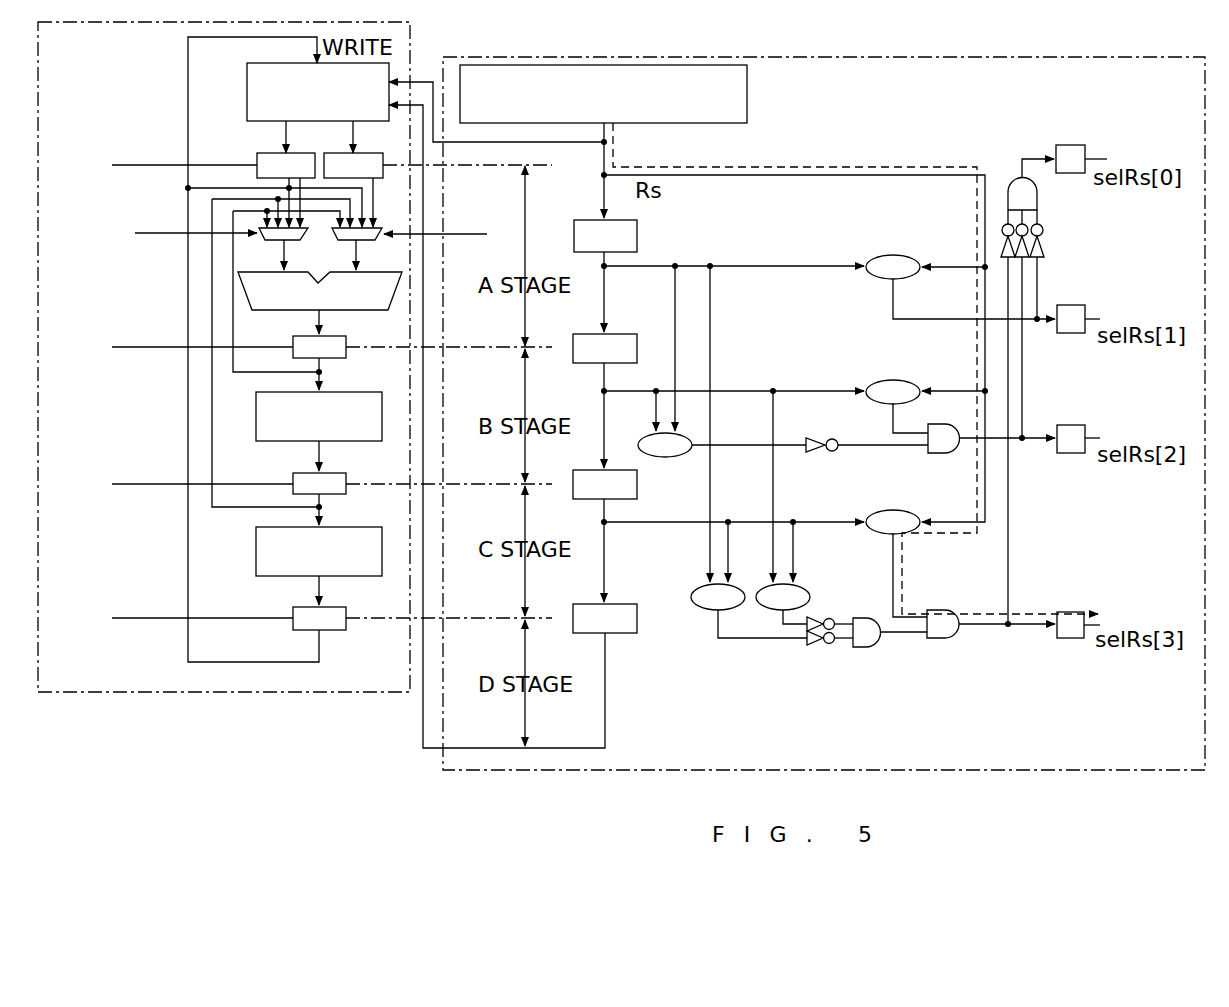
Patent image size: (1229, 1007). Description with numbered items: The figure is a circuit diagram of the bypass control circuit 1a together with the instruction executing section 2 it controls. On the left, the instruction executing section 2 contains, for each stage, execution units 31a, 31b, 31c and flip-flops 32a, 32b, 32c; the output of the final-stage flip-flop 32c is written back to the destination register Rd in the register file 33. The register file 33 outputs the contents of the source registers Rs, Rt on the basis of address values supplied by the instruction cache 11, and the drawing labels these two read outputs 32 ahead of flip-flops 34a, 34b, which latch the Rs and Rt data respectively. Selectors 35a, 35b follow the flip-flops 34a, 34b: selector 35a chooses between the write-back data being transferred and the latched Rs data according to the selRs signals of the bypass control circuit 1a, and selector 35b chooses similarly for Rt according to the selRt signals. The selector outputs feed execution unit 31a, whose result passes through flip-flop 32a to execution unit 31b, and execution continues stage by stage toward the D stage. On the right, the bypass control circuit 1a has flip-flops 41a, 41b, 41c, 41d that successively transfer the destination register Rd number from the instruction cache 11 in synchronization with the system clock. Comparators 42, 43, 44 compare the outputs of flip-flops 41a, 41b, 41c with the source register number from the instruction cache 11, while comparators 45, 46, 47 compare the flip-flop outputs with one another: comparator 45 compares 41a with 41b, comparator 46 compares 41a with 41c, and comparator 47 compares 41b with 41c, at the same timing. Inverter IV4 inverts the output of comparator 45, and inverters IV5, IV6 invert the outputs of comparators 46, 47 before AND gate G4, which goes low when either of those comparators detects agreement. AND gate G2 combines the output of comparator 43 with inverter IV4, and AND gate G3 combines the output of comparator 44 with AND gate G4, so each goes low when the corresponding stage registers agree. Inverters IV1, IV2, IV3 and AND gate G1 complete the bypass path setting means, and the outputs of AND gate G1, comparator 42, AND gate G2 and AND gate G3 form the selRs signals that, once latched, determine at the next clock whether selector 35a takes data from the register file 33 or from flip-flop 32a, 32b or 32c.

The bypass control circuit 1a is at (577, 57).
The instruction executing section 2 is at (85, 692).
The instruction cache 11 is at (747, 83).
The register file 33 is at (247, 85).
The register read ports 32 is at (350, 148).
The flip-flop 34a is at (264, 155).
The flip-flop 34b is at (392, 148).
The selector 35a is at (275, 240).
The selector 35b is at (348, 240).
The execution unit 31a is at (390, 310).
The execution unit 31b is at (340, 441).
The execution unit 31c is at (340, 576).
The flip-flop 32a is at (336, 358).
The flip-flop 32b is at (336, 494).
The flip-flop 32c is at (336, 630).
The flip-flop 41a is at (637, 238).
The flip-flop 41b is at (617, 343).
The flip-flop 41c is at (637, 486).
The flip-flop 41d is at (622, 612).
The comparator 42 is at (893, 254).
The comparator 43 is at (893, 379).
The comparator 44 is at (893, 510).
The comparator 45 is at (644, 436).
The comparator 46 is at (703, 609).
The comparator 47 is at (775, 614).
The AND gate G1 is at (1030, 190).
The AND gate G2 is at (940, 453).
The AND gate G3 is at (942, 638).
The AND gate G4 is at (870, 647).
The inverter IV1 is at (1036, 252).
The inverter IV2 is at (1043, 242).
The inverter IV3 is at (1012, 259).
The inverter IV4 is at (817, 456).
The inverter IV5 is at (818, 646).
The inverter IV6 is at (818, 620).